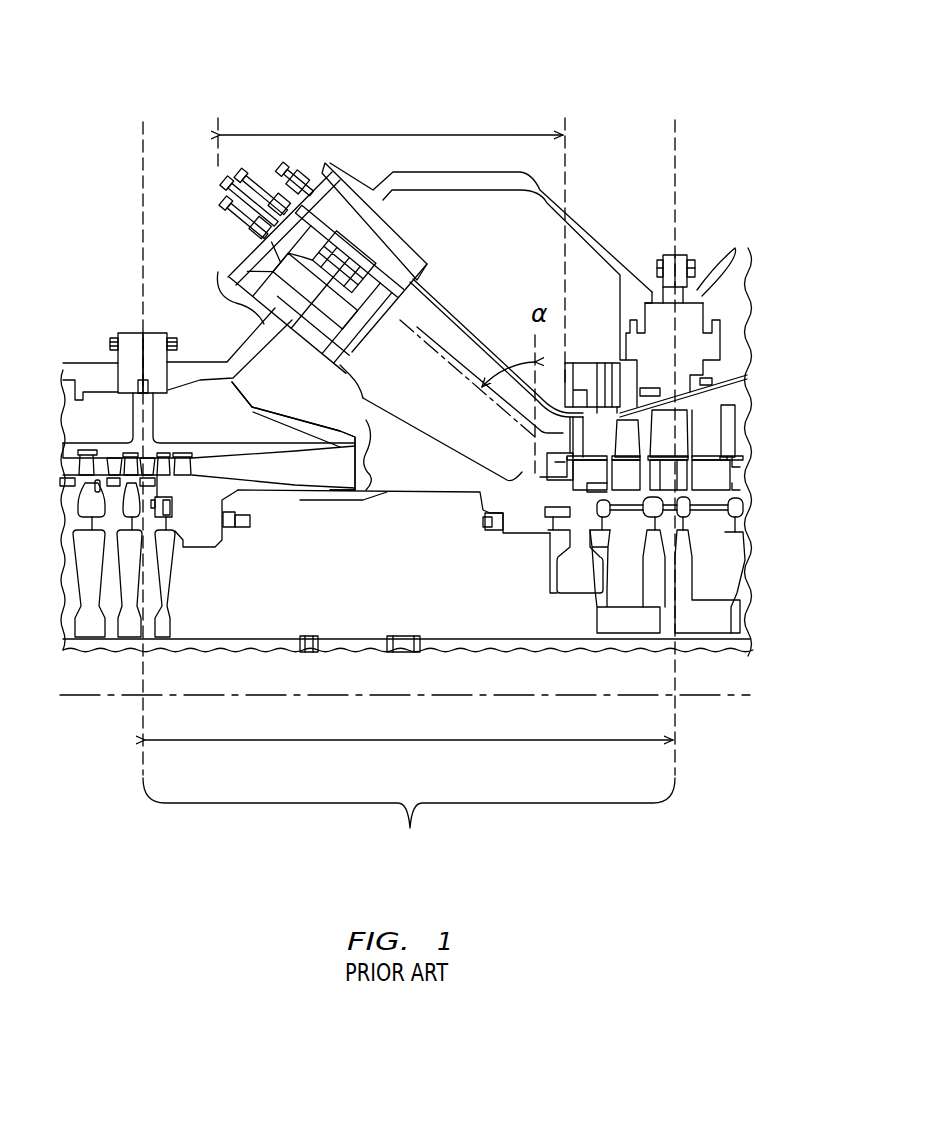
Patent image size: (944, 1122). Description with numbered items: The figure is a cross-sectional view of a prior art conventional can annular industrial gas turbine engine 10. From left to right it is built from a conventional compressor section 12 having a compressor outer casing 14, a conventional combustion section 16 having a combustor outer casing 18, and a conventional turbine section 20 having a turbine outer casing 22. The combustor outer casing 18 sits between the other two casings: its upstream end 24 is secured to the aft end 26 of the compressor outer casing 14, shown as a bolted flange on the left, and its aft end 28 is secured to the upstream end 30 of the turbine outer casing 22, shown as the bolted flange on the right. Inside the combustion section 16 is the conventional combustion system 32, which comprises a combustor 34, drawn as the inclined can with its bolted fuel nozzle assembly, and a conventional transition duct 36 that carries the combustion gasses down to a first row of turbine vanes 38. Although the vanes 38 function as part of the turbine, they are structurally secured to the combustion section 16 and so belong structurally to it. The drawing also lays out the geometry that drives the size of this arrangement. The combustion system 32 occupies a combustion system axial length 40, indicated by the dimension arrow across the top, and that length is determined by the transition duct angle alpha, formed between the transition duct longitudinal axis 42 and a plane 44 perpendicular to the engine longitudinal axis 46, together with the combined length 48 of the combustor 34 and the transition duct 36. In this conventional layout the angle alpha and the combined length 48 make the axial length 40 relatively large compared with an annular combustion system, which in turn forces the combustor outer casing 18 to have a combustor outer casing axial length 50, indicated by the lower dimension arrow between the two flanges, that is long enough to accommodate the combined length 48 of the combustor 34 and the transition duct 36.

The can annular industrial gas turbine engine 10 is at (580, 65).
The compressor section 12 is at (110, 282).
The compressor outer casing 14 is at (85, 370).
The combustion section 16 is at (418, 833).
The combustor outer casing 18 is at (450, 172).
The turbine section 20 is at (692, 238).
The turbine outer casing 22 is at (713, 292).
The upstream end 24 is at (155, 342).
The aft end 26 is at (132, 342).
The aft end 28 is at (645, 292).
The upstream end 30 is at (748, 253).
The combustion system 32 is at (370, 455).
The combustor 34 is at (392, 240).
The transition duct 36 is at (452, 322).
The first row of turbine vanes 38 is at (593, 437).
The combustion system axial length 40 is at (393, 134).
The transition duct longitudinal axis 42 is at (424, 345).
The plane 44 is at (566, 157).
The engine longitudinal axis 46 is at (307, 697).
The combined length 48 is at (293, 436).
The combustor outer casing axial length 50 is at (427, 740).